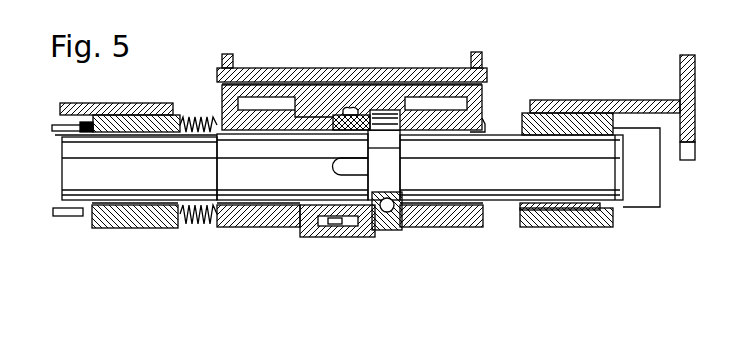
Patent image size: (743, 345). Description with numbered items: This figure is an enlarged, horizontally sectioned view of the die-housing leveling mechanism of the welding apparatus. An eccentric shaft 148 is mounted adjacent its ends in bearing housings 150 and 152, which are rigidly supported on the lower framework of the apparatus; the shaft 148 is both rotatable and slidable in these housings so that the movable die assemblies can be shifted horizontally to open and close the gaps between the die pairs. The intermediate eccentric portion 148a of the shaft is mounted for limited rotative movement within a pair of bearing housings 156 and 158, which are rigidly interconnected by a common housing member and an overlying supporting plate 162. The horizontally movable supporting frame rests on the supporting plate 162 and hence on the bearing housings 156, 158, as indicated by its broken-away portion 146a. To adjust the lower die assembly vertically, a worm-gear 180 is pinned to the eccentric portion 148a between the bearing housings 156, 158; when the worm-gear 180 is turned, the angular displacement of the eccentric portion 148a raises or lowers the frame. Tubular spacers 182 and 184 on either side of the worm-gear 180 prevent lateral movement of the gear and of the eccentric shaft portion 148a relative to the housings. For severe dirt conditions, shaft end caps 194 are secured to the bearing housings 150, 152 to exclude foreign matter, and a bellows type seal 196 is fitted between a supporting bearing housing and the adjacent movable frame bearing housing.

The broken-away portion of the supporting frame 146a is at (222, 62).
The eccentric shaft 148 is at (512, 180).
The eccentric portion of the shaft 148a is at (475, 142).
The bearing housing 150 is at (118, 228).
The bearing housing 152 is at (575, 228).
The bearing housing 156 is at (218, 228).
The bearing housing 158 is at (460, 228).
The supporting plate 162 is at (297, 68).
The worm-gear 180 is at (355, 107).
The tubular spacer 182 is at (306, 232).
The tubular spacer 184 is at (392, 230).
The shaft end cap 194 is at (55, 128).
The bellows type seal 196 is at (198, 115).